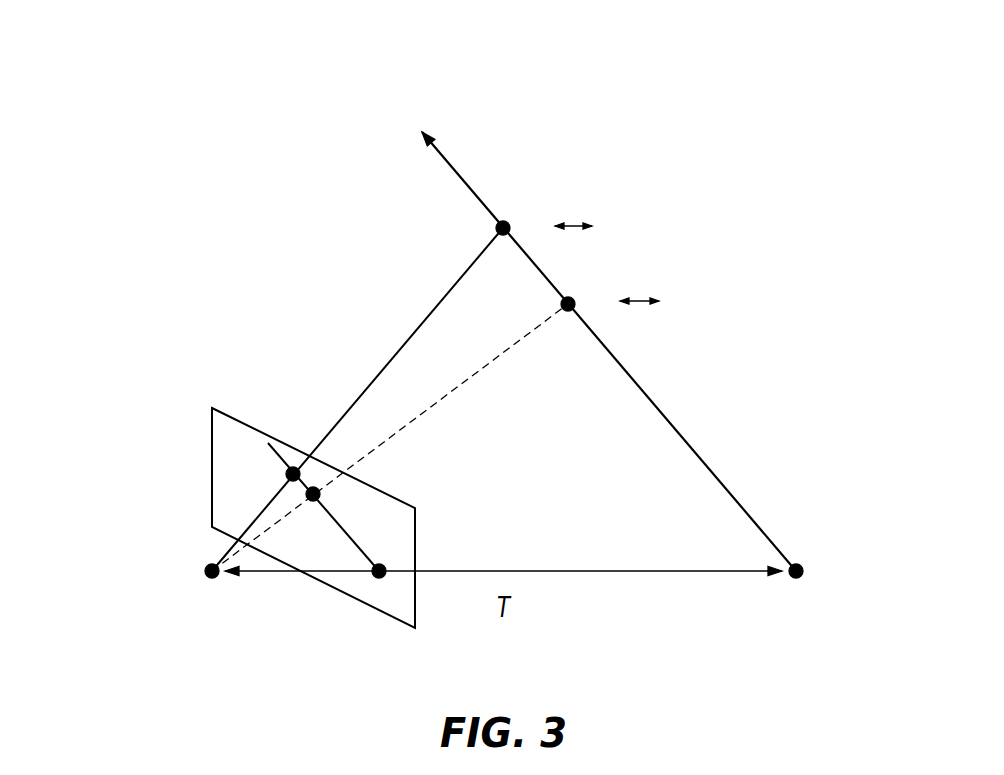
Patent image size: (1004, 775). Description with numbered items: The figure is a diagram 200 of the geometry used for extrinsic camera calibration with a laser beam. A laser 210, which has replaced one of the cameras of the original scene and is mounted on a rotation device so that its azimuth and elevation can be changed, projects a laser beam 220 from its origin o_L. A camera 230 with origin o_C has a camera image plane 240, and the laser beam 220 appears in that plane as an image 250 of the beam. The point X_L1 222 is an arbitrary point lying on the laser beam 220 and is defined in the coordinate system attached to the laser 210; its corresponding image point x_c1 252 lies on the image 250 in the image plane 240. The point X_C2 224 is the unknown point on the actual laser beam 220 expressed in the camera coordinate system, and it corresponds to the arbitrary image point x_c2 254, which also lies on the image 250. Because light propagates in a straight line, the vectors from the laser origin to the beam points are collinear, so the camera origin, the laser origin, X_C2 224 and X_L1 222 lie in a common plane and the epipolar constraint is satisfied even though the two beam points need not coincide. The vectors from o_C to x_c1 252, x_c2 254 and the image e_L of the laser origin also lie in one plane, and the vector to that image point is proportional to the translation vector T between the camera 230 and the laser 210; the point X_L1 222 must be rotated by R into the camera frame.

The diagram 200 is at (328, 70).
The laser 210 is at (805, 565).
The laser beam 220 is at (641, 383).
The point X_L1 222 is at (568, 313).
The point X_C2 224 is at (506, 220).
The camera 230 is at (211, 566).
The camera image plane 240 is at (218, 421).
The image of the laser beam 250 is at (355, 543).
The point x_c1 252 is at (320, 496).
The point x_c2 254 is at (293, 467).